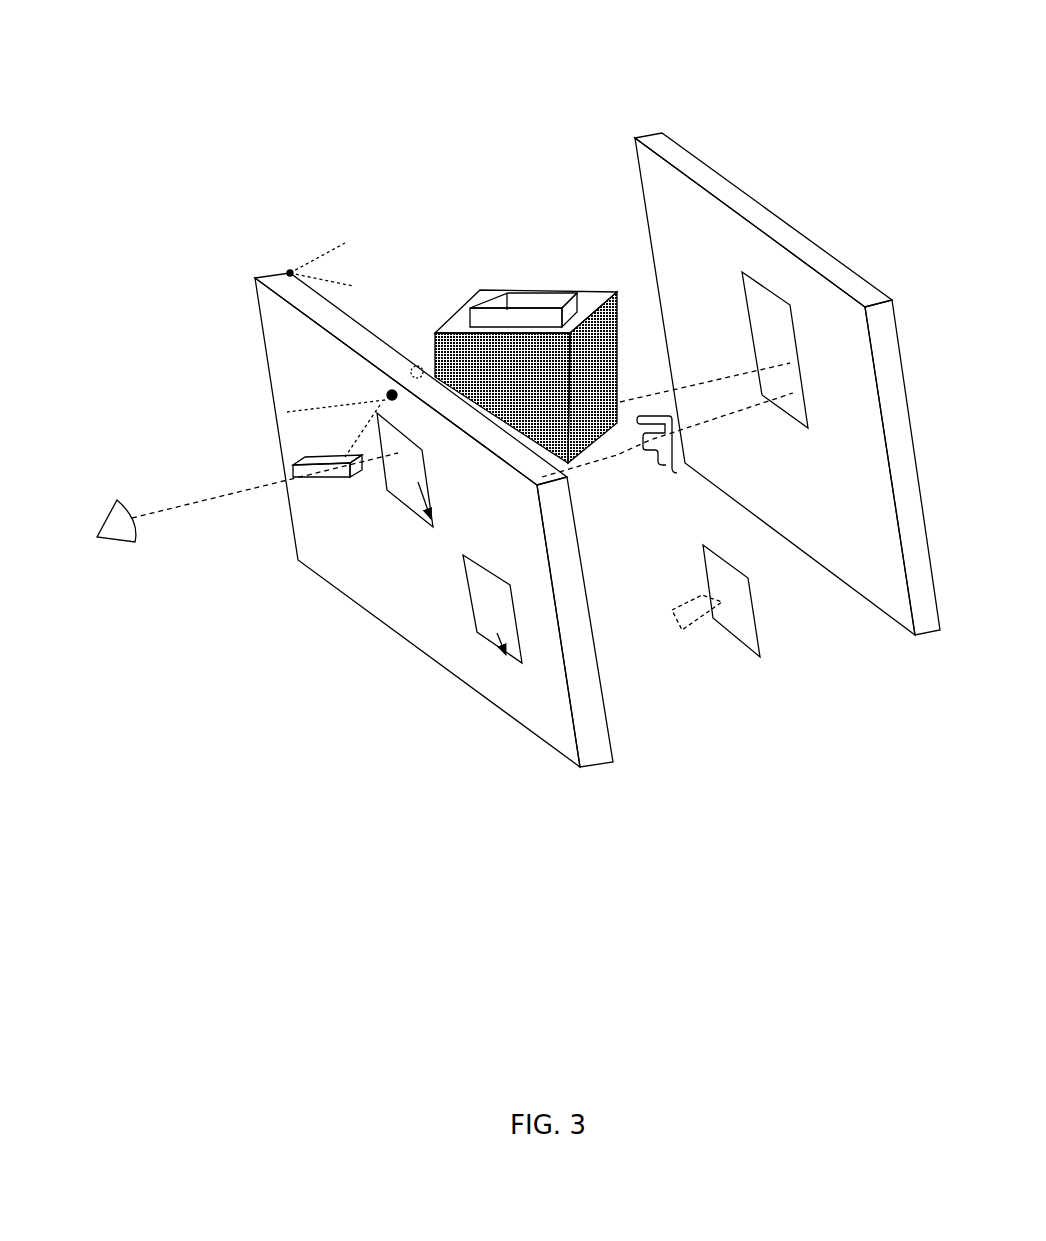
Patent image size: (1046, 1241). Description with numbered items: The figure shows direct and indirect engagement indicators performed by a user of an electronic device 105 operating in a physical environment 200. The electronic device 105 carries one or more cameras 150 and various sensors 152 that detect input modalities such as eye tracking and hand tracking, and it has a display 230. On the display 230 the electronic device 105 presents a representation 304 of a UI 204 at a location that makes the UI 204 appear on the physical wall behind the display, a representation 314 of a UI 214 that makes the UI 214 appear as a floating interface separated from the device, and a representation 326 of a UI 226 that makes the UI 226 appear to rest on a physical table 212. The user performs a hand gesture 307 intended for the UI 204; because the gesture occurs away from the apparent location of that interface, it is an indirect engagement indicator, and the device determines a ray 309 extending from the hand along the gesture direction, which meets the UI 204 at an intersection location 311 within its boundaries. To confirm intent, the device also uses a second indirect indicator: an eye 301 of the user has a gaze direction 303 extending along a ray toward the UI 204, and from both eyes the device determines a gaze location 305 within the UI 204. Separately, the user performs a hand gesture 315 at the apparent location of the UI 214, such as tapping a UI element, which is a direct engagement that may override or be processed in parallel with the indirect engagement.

The electronic device 105 is at (630, 773).
The camera 150 is at (290, 272).
The sensor 152 is at (417, 366).
The physical environment 200 is at (879, 25).
The user interface 204 is at (768, 287).
The physical table 212 is at (617, 292).
The user interface 214 is at (737, 628).
The user interface 226 is at (525, 292).
The display 230 is at (383, 595).
The eye 301 is at (87, 507).
The gaze direction 303 is at (242, 495).
The representation of the UI 204 304 is at (432, 522).
The gaze location 305 is at (788, 362).
The hand gesture 307 is at (653, 462).
The ray 309 is at (718, 418).
The intersection location 311 is at (792, 393).
The representation of the UI 214 314 is at (505, 658).
The hand gesture 315 is at (696, 636).
The representation of the UI 226 326 is at (348, 478).